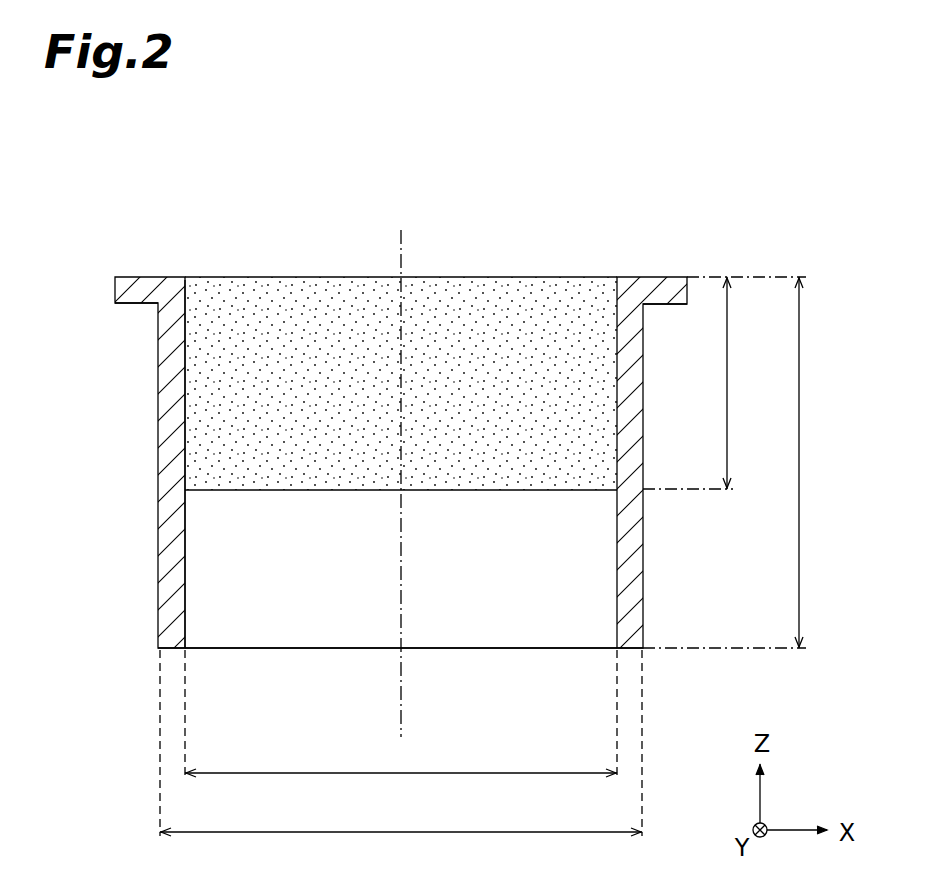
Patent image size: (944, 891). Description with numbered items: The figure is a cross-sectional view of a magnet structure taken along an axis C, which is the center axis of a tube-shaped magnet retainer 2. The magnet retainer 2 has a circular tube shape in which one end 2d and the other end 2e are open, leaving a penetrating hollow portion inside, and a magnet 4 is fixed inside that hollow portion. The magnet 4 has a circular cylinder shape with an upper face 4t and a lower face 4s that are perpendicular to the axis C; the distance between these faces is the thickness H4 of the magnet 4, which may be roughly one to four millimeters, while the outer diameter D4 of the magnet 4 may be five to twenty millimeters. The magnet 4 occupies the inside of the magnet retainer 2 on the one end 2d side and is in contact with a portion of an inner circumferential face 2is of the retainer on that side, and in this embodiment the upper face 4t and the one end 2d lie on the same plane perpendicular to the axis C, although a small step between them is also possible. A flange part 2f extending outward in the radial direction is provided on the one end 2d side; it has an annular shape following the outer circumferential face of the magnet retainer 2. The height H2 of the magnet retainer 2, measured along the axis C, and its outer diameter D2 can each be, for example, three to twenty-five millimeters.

The magnet retainer 2 is at (170, 470).
The one end 2d is at (645, 277).
The other end 2e is at (522, 648).
The flange part 2f is at (125, 305).
The inner circumferential face 2is is at (185, 577).
The magnet 4 is at (332, 277).
The upper face 4t is at (442, 277).
The lower face 4s is at (298, 492).
The axis C is at (403, 728).
The outer diameter of the magnet retainer D2 is at (401, 846).
The outer diameter of the magnet D4 is at (401, 787).
The height of the magnet retainer H2 is at (818, 462).
The thickness of the magnet H4 is at (746, 383).